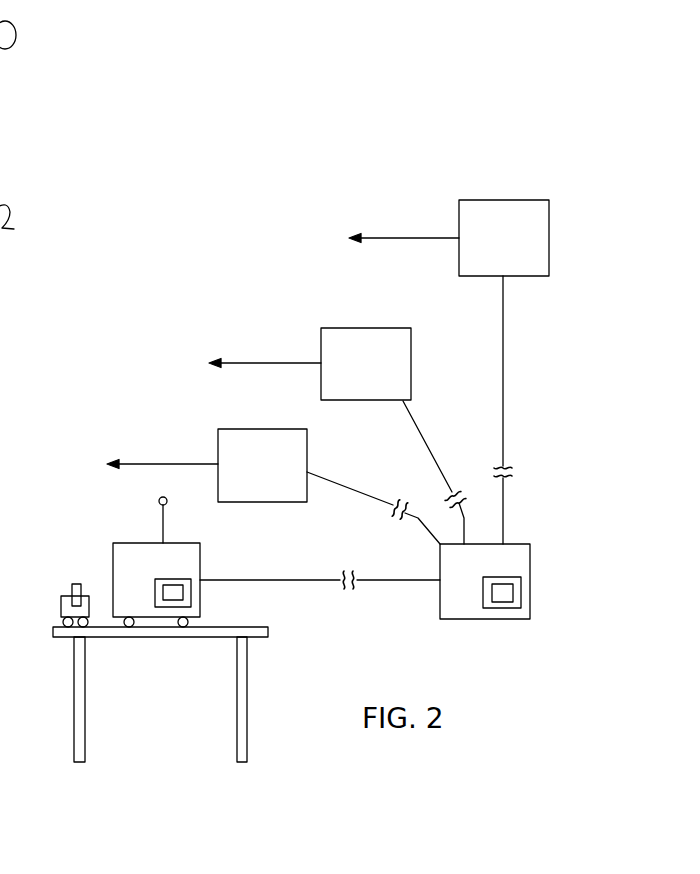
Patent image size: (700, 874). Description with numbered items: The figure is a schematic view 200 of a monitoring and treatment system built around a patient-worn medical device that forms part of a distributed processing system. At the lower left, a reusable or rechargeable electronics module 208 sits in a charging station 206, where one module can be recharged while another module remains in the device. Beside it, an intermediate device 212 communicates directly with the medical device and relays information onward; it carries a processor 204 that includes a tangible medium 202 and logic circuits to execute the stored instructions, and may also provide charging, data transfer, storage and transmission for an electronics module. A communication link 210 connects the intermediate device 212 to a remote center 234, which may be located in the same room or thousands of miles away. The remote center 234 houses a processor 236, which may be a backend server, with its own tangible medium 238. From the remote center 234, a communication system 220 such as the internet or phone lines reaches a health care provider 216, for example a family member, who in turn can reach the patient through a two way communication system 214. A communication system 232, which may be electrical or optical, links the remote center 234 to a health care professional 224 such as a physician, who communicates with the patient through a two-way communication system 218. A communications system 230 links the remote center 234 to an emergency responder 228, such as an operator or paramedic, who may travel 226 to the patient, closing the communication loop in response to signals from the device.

The schematic view 200 is at (596, 82).
The tangible medium 202 is at (183, 598).
The processor 204 is at (191, 582).
The charging station 206 is at (61, 607).
The electronics module 208 is at (76, 583).
The communication link 210 is at (270, 579).
The intermediate device 212 is at (128, 543).
The two way communication system 214 is at (142, 464).
The health care provider 216 is at (265, 429).
The two-way communication system 218 is at (245, 363).
The communication system 220 is at (345, 485).
The health care professional 224 is at (380, 328).
The travel 226 is at (383, 238).
The emergency responder 228 is at (520, 200).
The communications system 230 is at (504, 379).
The communication system 232 is at (429, 447).
The remote center 234 is at (525, 544).
The processor 236 is at (521, 582).
The tangible medium 238 is at (513, 599).